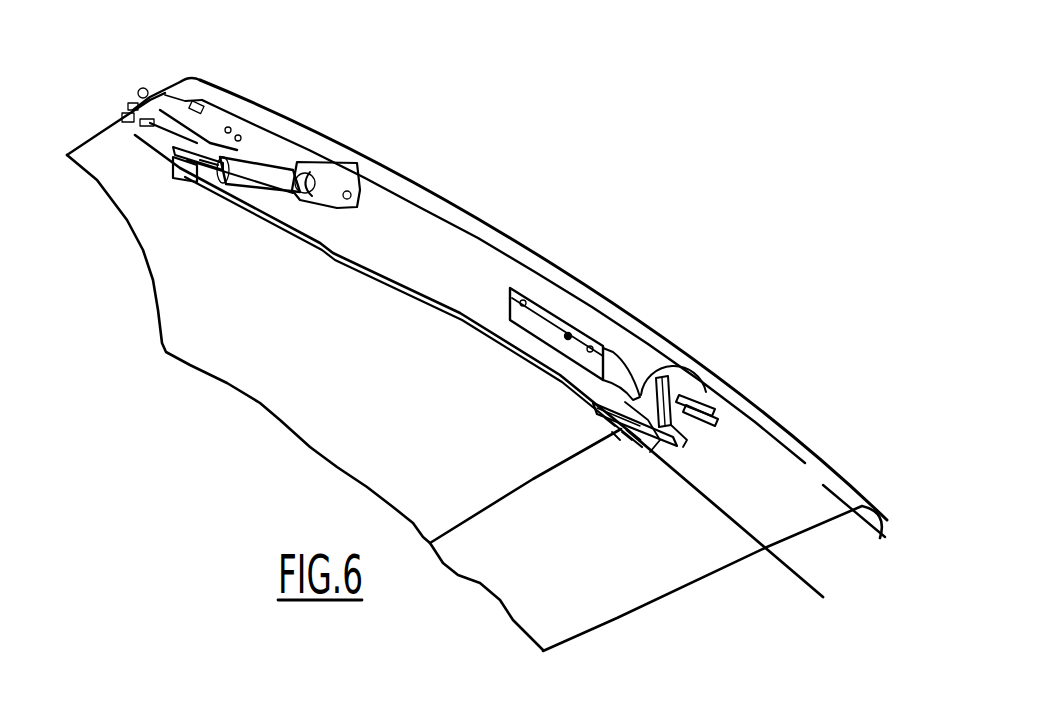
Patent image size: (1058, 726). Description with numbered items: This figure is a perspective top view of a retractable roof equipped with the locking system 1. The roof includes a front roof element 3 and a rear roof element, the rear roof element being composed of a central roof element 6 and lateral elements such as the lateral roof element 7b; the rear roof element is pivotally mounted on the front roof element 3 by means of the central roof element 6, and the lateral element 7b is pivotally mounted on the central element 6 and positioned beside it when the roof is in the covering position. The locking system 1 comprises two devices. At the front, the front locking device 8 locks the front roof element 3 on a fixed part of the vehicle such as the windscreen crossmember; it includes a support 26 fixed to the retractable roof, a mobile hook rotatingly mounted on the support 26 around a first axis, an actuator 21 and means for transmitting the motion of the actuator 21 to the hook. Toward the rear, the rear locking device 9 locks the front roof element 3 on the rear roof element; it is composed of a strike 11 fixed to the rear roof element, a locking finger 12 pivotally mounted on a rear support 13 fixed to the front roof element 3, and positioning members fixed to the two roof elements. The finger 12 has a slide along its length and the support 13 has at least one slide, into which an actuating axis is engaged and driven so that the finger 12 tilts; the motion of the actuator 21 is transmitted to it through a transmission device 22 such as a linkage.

The locking system 1 is at (437, 262).
The front roof element 3 is at (357, 310).
The central roof element 6 is at (617, 530).
The lateral roof element 7b is at (760, 487).
The front locking device 8 is at (300, 118).
The rear locking device 9 is at (660, 332).
The strike 11 is at (703, 395).
The locking finger 12 is at (652, 400).
The rear support 13 is at (567, 333).
The actuator 21 is at (240, 167).
The transmission device 22 is at (433, 306).
The support 26 is at (300, 153).